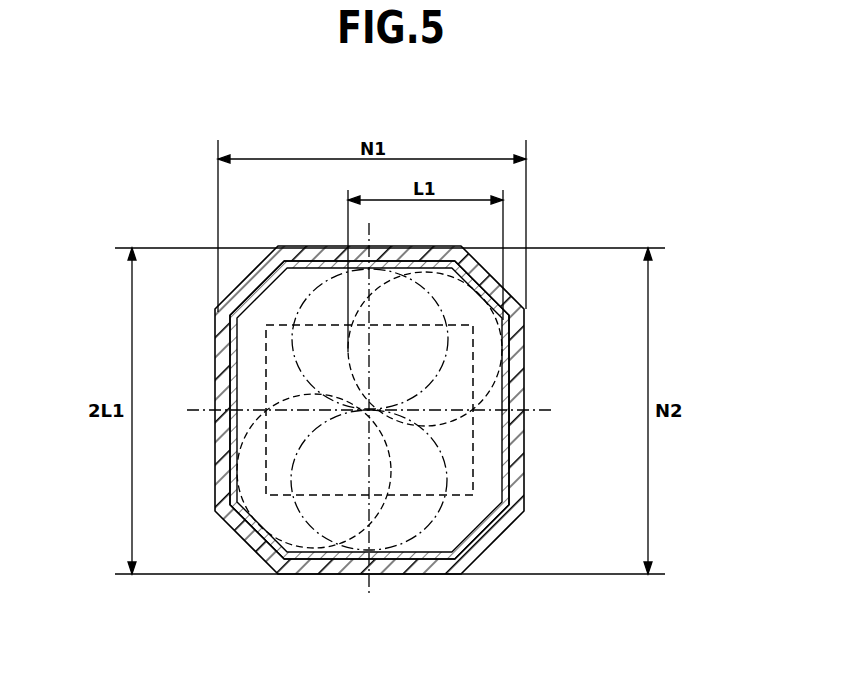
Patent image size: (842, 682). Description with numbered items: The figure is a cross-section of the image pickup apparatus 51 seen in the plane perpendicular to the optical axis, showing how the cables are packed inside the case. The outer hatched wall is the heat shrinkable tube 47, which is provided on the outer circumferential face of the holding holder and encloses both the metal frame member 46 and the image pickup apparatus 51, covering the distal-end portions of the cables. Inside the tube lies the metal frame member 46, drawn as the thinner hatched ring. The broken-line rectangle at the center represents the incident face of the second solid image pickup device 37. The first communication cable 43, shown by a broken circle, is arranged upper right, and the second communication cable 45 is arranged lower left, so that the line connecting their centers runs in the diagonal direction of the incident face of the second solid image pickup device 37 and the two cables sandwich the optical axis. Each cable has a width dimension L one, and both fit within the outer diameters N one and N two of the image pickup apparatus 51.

The image pickup apparatus 51 is at (411, 324).
The heat shrinkable tube 47 is at (511, 377).
The metal frame member 46 is at (507, 430).
The second solid image pickup device 37 is at (467, 312).
The first communication cable 43 is at (456, 440).
The second communication cable 45 is at (381, 519).